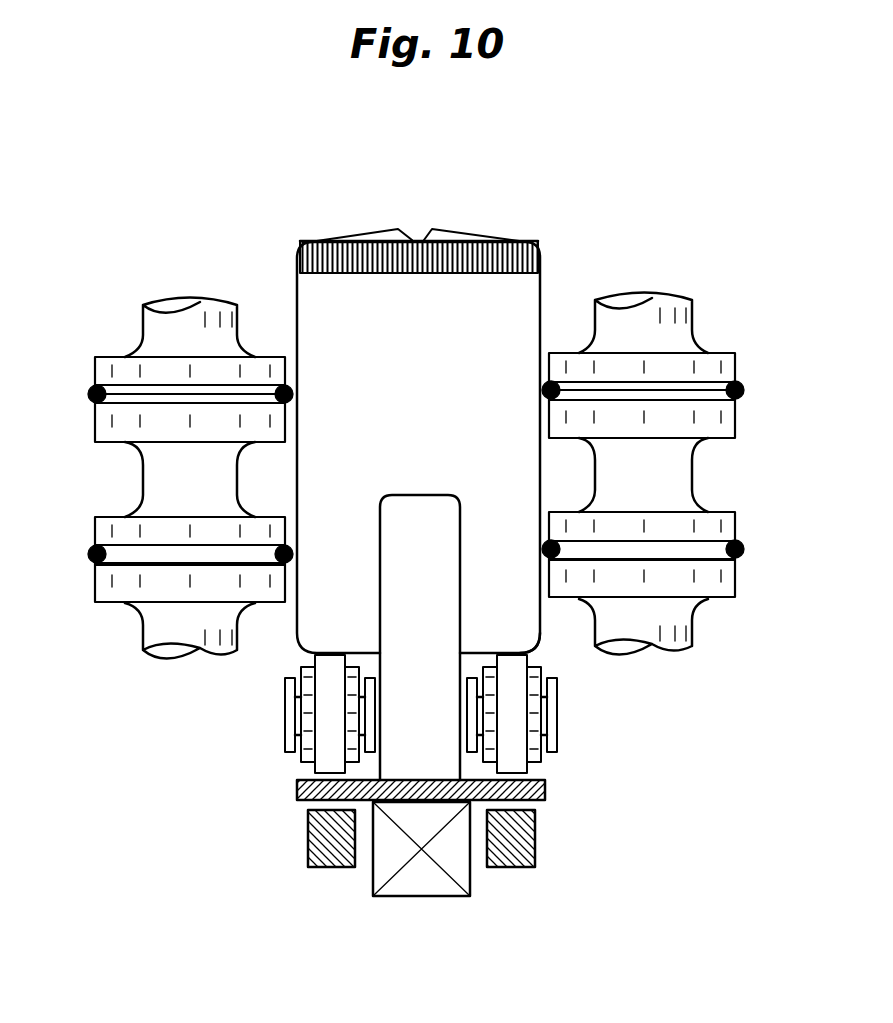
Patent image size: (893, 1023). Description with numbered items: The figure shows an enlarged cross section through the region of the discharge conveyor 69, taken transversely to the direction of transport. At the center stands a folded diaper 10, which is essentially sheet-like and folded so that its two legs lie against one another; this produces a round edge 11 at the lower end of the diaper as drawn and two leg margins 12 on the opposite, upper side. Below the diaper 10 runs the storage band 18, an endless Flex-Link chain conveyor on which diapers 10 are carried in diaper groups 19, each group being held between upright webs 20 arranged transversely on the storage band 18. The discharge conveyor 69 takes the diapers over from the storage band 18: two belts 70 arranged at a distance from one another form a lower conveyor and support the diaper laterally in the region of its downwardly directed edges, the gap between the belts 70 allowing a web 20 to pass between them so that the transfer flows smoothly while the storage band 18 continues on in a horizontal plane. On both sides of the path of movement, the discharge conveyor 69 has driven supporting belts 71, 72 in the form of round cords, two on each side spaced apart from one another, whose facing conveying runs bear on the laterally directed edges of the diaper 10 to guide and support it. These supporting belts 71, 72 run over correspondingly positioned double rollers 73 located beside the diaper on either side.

The diaper 10 is at (512, 320).
The round edge 11 is at (475, 652).
The leg margins 12 is at (484, 243).
The storage band 18 is at (326, 905).
The diaper group 19 is at (561, 197).
The web 20 is at (420, 510).
The discharge conveyor 69 is at (162, 817).
The belts 70 is at (330, 740).
The supporting belt 71 is at (88, 396).
The supporting belt 72 is at (88, 567).
The double rollers 73 is at (93, 317).